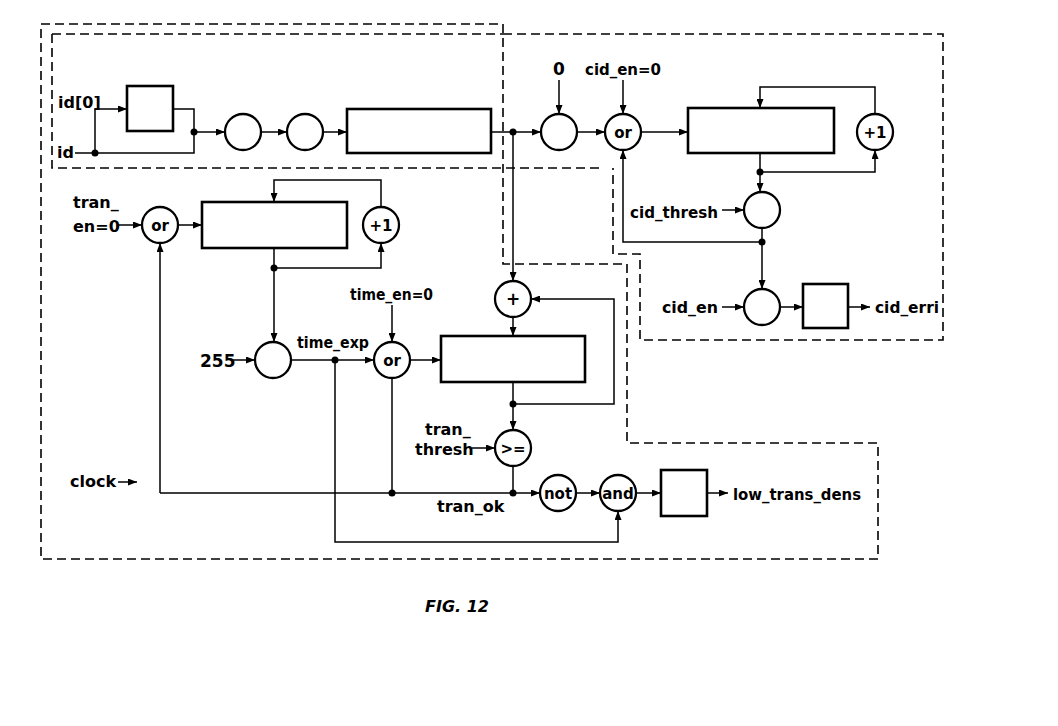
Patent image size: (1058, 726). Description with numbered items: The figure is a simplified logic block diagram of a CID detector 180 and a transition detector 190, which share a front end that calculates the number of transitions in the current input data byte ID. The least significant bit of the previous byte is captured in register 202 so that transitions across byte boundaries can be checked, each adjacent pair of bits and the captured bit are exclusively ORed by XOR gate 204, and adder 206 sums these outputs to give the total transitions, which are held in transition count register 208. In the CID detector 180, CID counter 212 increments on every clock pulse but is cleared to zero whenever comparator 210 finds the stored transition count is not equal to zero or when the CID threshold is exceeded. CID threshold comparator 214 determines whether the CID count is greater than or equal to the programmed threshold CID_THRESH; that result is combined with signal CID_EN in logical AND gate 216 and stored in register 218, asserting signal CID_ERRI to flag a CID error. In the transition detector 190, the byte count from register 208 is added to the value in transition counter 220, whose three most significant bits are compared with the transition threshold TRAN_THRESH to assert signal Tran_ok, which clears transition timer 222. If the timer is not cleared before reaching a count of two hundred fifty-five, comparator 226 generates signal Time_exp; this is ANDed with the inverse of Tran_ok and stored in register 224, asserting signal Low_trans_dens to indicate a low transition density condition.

The CID detector 180 is at (805, 341).
The transition detector 190 is at (752, 443).
The register 202 is at (148, 86).
The XOR gate 204 is at (243, 114).
The adder 206 is at (305, 114).
The transition count register 208 is at (418, 109).
The comparator 210 is at (548, 119).
The CID counter 212 is at (731, 108).
The CID threshold comparator 214 is at (780, 210).
The logical AND gate 216 is at (772, 291).
The register 218 is at (825, 284).
The transition counter 220 is at (478, 336).
The transition timer 222 is at (247, 248).
The register 224 is at (683, 516).
The comparator 226 is at (270, 378).